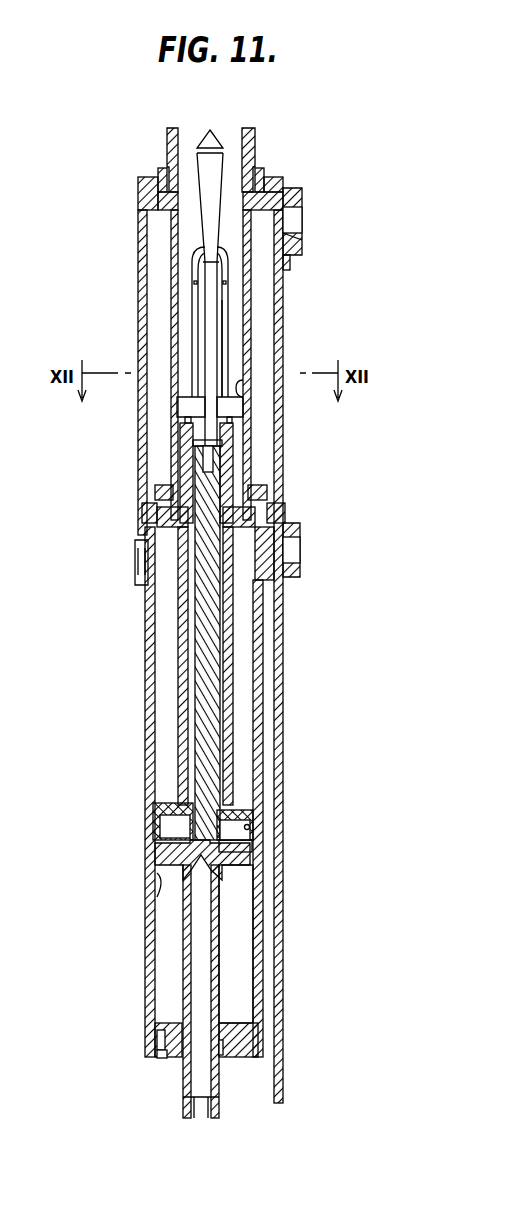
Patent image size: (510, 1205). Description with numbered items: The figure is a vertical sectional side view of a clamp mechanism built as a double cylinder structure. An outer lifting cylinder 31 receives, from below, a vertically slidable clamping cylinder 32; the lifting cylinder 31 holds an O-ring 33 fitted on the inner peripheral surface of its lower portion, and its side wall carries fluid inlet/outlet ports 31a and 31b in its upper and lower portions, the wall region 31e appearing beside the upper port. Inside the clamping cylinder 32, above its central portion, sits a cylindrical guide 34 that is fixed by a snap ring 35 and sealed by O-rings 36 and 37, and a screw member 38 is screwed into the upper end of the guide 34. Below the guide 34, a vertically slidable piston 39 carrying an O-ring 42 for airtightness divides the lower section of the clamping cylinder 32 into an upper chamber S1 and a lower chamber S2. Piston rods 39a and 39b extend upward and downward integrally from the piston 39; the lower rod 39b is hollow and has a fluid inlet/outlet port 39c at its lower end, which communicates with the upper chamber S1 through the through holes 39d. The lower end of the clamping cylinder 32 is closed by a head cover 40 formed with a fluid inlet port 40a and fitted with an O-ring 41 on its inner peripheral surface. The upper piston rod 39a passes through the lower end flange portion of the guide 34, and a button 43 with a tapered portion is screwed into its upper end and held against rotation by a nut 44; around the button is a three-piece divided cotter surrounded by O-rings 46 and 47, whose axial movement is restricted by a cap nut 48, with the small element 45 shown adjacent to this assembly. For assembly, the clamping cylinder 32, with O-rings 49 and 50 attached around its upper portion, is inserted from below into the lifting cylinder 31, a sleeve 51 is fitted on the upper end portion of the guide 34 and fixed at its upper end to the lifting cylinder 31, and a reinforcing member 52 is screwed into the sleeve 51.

The lifting cylinder 31 is at (138, 332).
The fluid inlet/outlet port 31a is at (298, 218).
The fluid inlet/outlet port 31b is at (300, 550).
The shoulder 31e is at (290, 275).
The clamping cylinder 32 is at (148, 945).
The O-ring 33 is at (140, 565).
The cylindrical guide 34 is at (182, 640).
The snap ring 35 is at (160, 830).
The O-ring 36 is at (247, 827).
The O-ring 37 is at (252, 826).
The screw member 38 is at (233, 470).
The piston 39 is at (154, 1000).
The piston rod 39a is at (196, 685).
The piston rod 39b is at (186, 975).
The fluid inlet/outlet port 39c is at (188, 1116).
The through holes 39d is at (160, 840).
The head cover 40 is at (156, 1042).
The fluid inlet port 40a is at (162, 1058).
The O-ring 41 is at (221, 1055).
The O-ring 42 is at (158, 858).
The button 43 is at (203, 228).
The nut 44 is at (194, 443).
The valve stem 45 is at (223, 338).
The O-ring 46 is at (174, 300).
The O-ring 47 is at (185, 416).
The cap nut 48 is at (243, 380).
The O-ring 49 is at (143, 512).
The O-ring 50 is at (157, 492).
The sleeve 51 is at (158, 178).
The reinforcing member 52 is at (168, 138).
The upper chamber S1 is at (252, 846).
The lower chamber S2 is at (240, 937).